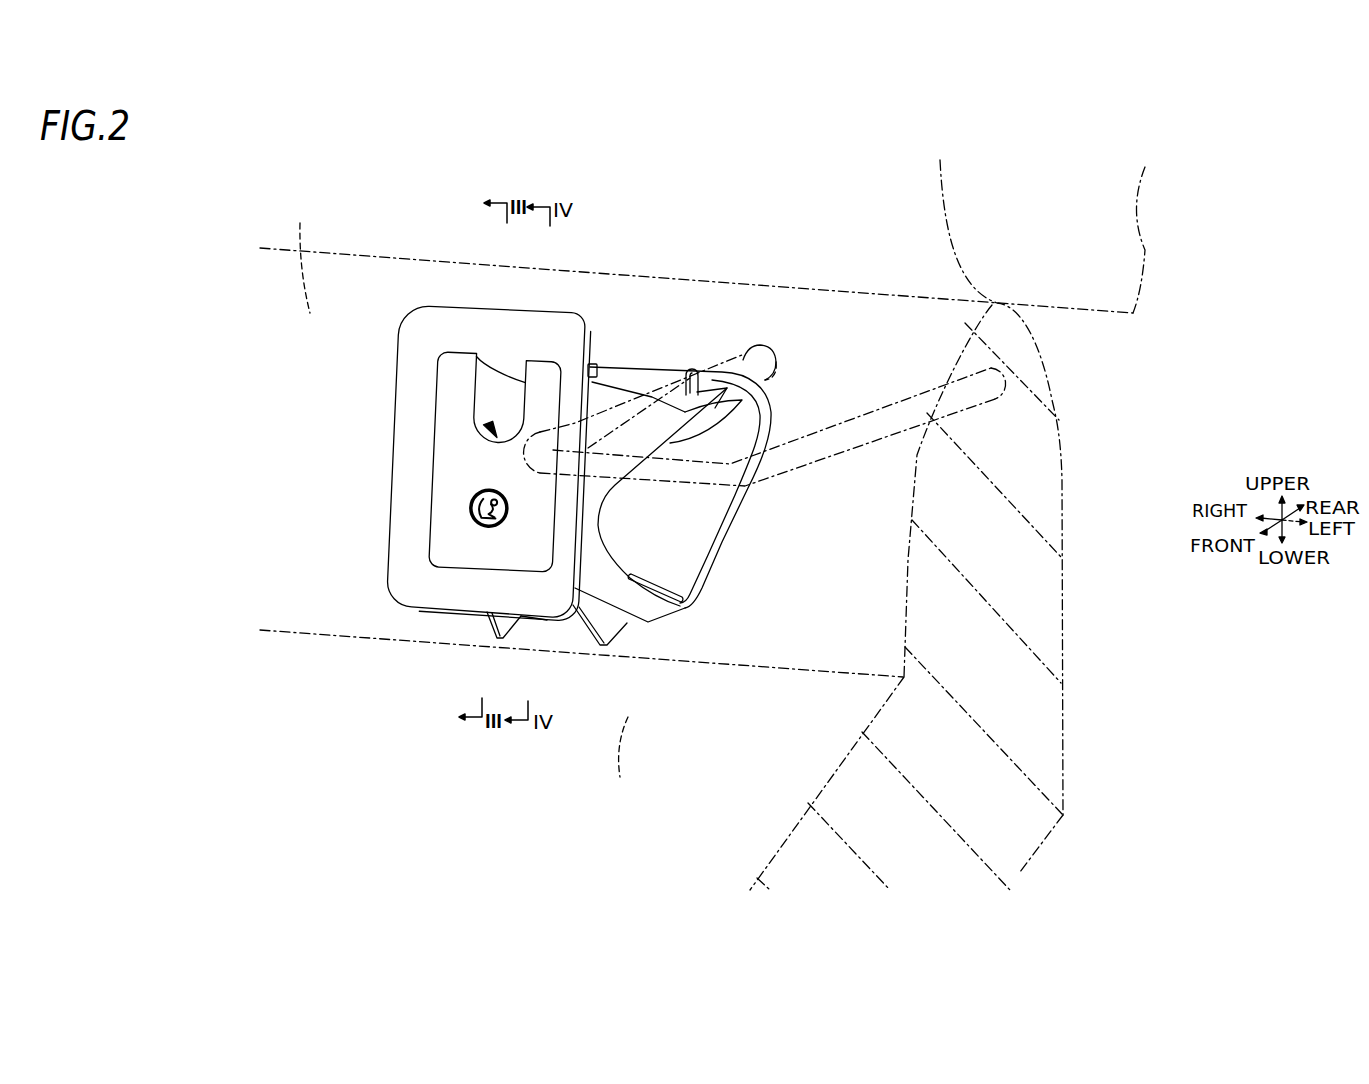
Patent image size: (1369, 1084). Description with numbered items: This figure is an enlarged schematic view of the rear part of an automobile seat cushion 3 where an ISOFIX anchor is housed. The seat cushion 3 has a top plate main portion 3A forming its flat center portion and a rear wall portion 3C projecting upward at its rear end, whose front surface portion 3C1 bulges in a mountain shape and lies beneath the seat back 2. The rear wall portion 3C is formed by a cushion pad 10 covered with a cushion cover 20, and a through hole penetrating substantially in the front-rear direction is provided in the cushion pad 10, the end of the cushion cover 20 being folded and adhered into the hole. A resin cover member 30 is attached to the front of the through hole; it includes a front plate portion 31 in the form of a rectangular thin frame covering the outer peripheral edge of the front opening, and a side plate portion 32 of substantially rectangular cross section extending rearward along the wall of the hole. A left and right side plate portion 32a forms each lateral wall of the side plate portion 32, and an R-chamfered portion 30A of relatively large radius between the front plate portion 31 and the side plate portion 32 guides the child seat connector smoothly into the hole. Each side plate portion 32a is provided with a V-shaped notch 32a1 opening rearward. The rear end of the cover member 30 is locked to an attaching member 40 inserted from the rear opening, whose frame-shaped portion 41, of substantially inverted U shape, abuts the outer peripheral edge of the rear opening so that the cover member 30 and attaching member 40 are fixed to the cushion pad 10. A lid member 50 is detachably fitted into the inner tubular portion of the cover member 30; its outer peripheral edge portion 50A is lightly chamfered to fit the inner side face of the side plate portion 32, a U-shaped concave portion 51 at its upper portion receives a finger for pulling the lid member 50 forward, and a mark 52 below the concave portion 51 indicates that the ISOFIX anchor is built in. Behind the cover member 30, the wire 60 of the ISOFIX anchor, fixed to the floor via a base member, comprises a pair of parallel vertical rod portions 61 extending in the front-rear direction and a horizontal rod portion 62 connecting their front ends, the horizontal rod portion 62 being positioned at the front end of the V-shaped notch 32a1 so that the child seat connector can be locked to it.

The seat back 2 is at (1153, 244).
The seat cushion 3 is at (942, 525).
The top plate main portion 3A is at (630, 734).
The rear wall portion 3C is at (1045, 492).
The front surface portion 3C1 is at (321, 257).
The cushion pad 10 is at (968, 616).
The cushion cover 20 is at (313, 575).
The cover member 30 is at (416, 304).
The R-chamfered portion 30A is at (457, 327).
The front plate portion 31 is at (545, 327).
The side plate portion 32 is at (659, 380).
The left and right side plate portions 32a is at (648, 447).
The V-shaped notch 32a1 is at (685, 437).
The attaching member 40 is at (743, 358).
The frame-shaped portion 41 is at (722, 510).
The lid member 50 is at (449, 401).
The outer peripheral edge portion 50A is at (449, 401).
The concave portion 51 is at (493, 397).
The mark 52 is at (473, 516).
The wire 60 is at (825, 467).
The vertical rod portions 61 is at (612, 420).
The horizontal rod portion 62 is at (675, 478).